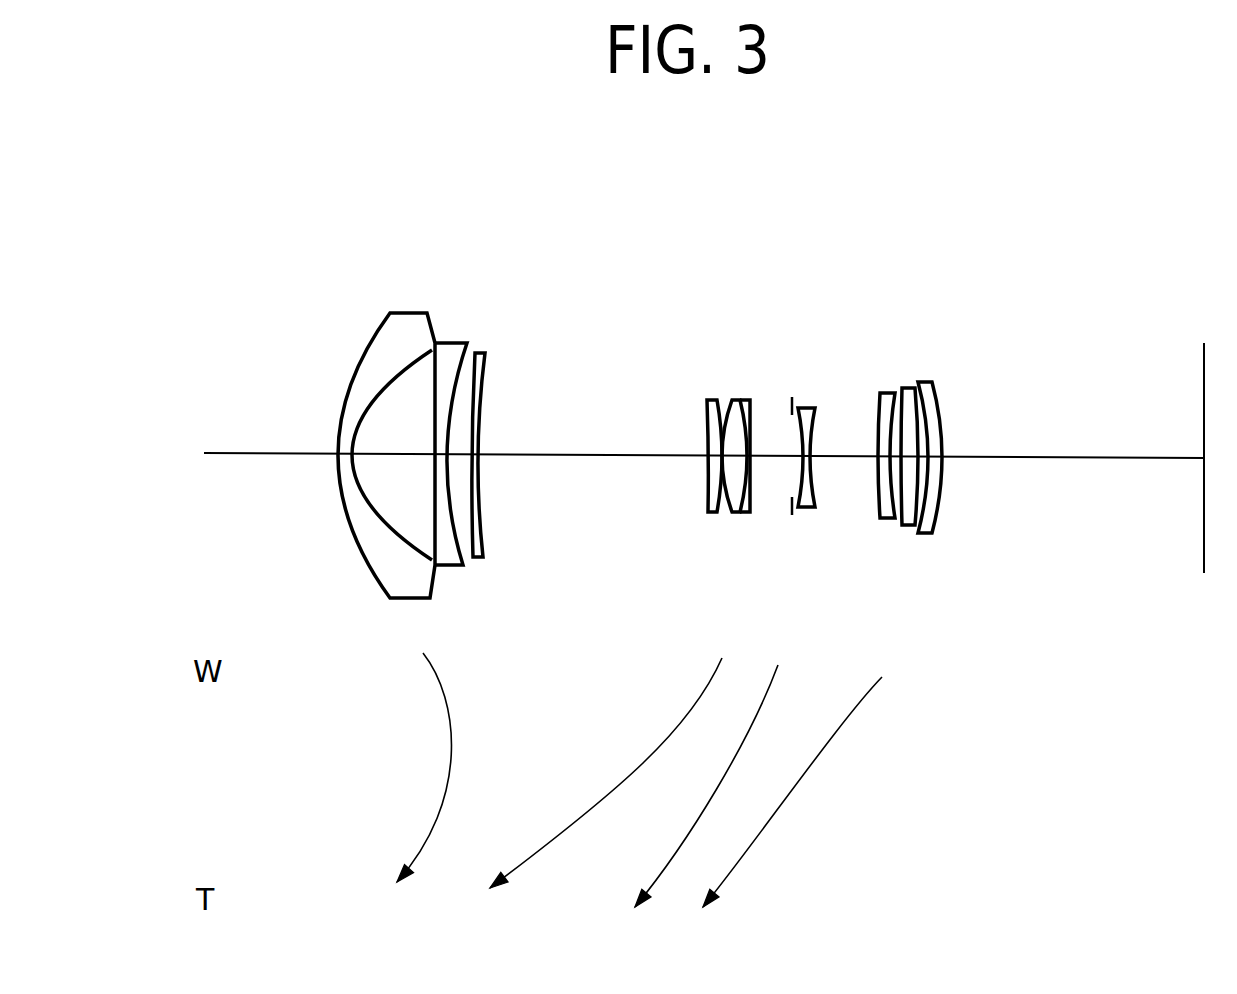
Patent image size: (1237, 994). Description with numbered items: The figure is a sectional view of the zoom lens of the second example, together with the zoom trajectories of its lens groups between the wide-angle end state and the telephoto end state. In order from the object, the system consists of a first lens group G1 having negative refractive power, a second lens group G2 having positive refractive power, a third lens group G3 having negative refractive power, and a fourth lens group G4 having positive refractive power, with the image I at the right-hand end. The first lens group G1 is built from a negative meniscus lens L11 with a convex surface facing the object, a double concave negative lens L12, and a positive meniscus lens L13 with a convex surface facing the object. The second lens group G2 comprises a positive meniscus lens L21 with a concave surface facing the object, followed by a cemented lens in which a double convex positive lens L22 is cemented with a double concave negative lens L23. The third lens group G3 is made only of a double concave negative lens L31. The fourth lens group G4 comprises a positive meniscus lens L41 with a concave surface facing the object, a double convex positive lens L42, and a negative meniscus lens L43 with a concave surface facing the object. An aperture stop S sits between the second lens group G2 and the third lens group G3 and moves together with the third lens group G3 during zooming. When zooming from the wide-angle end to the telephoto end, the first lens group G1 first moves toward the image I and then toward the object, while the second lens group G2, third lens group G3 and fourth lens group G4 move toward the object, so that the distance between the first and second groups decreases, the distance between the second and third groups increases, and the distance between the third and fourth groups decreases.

The first lens group G1 is at (490, 600).
The negative meniscus lens L11 is at (400, 313).
The double concave negative lens L12 is at (443, 343).
The positive meniscus lens L13 is at (483, 352).
The second lens group G2 is at (755, 527).
The positive meniscus lens L21 is at (708, 400).
The double convex positive lens L22 is at (733, 398).
The double concave negative lens L23 is at (747, 398).
The aperture stop S is at (792, 403).
The third lens group G3 is at (818, 527).
The double concave negative lens L31 is at (804, 406).
The fourth lens group G4 is at (938, 547).
The positive meniscus lens L41 is at (887, 393).
The double convex positive lens L42 is at (908, 388).
The negative meniscus lens L43 is at (922, 382).
The image I is at (1204, 365).